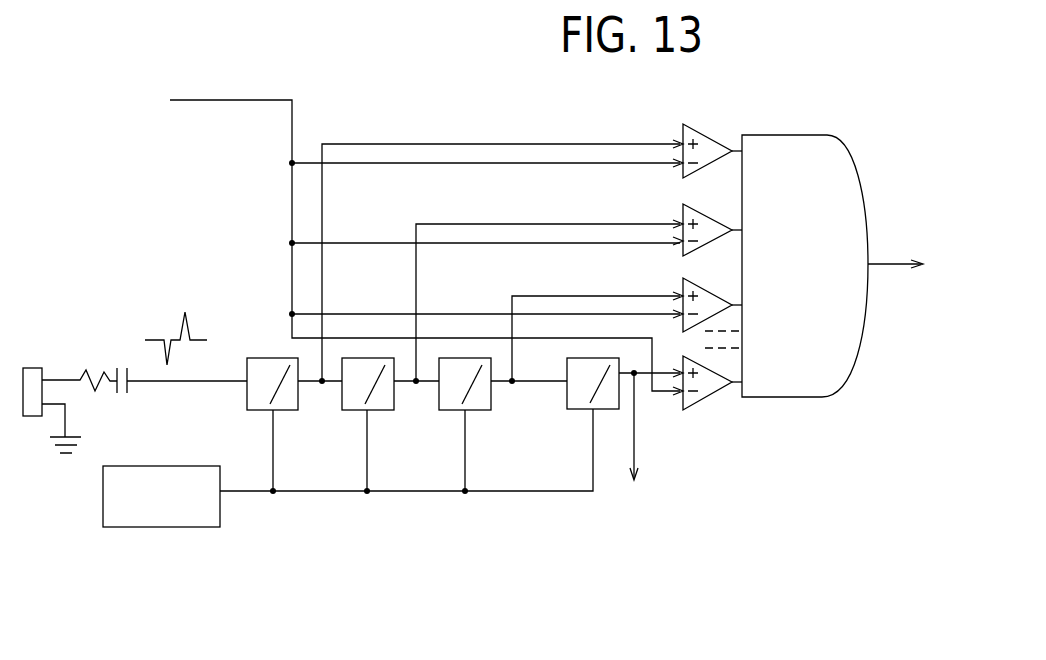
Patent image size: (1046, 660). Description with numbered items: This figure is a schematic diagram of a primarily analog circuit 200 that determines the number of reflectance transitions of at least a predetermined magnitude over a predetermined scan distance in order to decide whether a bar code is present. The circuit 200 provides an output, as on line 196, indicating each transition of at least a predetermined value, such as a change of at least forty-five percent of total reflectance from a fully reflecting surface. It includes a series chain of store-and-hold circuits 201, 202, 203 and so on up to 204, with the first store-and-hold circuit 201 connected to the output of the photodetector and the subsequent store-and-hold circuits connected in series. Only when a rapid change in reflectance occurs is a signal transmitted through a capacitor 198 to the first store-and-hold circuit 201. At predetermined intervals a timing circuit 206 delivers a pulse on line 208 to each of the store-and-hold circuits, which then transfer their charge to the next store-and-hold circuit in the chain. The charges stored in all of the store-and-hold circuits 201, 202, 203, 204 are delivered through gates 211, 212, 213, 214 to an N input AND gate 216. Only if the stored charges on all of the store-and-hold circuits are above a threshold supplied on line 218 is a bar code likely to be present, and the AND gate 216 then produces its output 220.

The line 196 is at (312, 381).
The capacitor 198 is at (123, 366).
The circuit 200 is at (161, 271).
The store-and-hold circuit 201 is at (247, 395).
The store-and-hold circuit 202 is at (341, 400).
The store-and-hold circuit 203 is at (438, 400).
The store-and-hold circuit 204 is at (566, 398).
The timing circuit 206 is at (182, 527).
The line 208 is at (242, 492).
The gate 211 is at (715, 138).
The gate 212 is at (702, 210).
The gate 213 is at (702, 288).
The gate 214 is at (705, 400).
The N input AND gate 216 is at (792, 402).
The line 218 is at (253, 100).
The output 220 is at (892, 263).